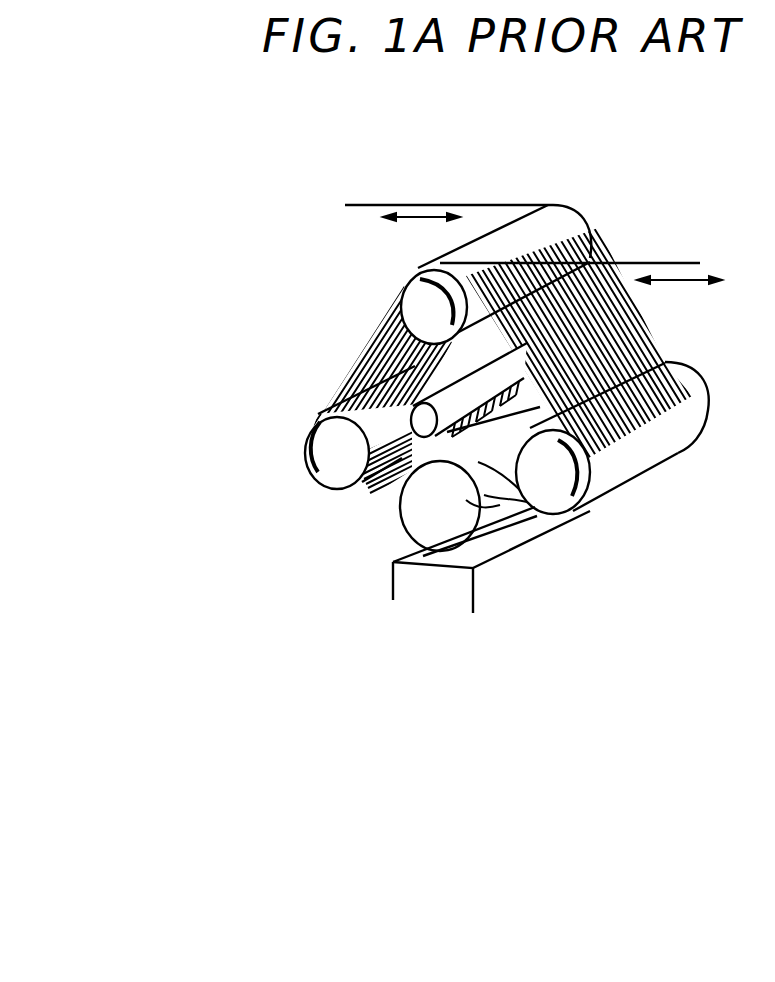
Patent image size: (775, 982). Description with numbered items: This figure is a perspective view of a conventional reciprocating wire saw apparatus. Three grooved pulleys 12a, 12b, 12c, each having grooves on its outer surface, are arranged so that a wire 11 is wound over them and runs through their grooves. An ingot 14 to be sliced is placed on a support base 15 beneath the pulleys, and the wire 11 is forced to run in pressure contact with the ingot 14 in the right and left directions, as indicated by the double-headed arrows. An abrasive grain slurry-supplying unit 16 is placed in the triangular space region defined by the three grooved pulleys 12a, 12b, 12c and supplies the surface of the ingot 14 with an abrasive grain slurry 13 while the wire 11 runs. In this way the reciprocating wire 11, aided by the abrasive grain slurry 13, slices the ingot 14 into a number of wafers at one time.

The wire 11 is at (499, 193).
The grooved pulley 12a is at (418, 298).
The grooved pulley 12b is at (343, 468).
The grooved pulley 12c is at (593, 470).
The abrasive grain slurry 13 is at (532, 508).
The ingot 14 is at (435, 523).
The support base 15 is at (513, 575).
The abrasive grain slurry-supplying unit 16 is at (415, 393).